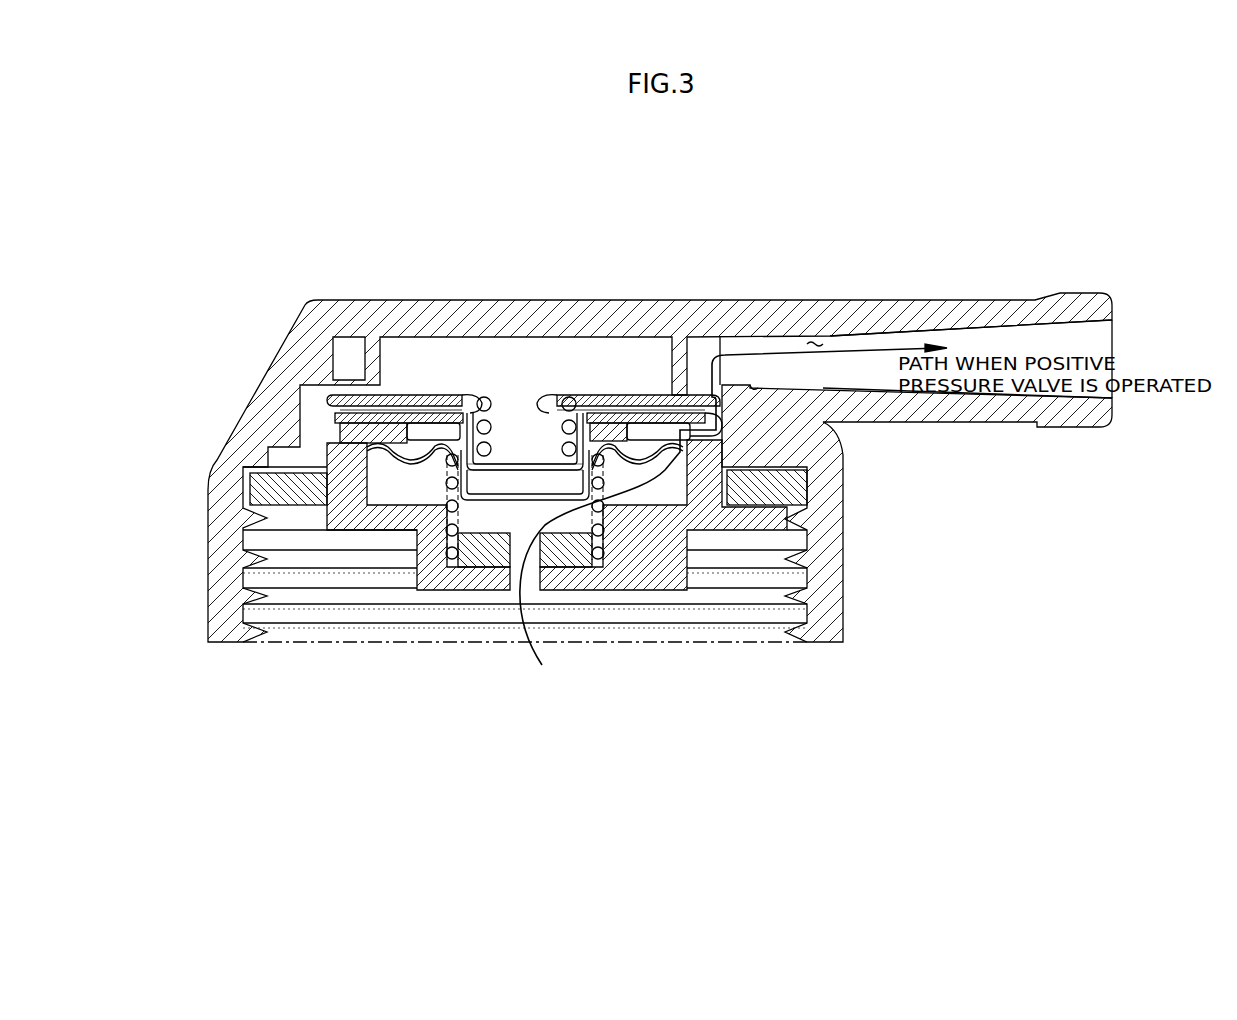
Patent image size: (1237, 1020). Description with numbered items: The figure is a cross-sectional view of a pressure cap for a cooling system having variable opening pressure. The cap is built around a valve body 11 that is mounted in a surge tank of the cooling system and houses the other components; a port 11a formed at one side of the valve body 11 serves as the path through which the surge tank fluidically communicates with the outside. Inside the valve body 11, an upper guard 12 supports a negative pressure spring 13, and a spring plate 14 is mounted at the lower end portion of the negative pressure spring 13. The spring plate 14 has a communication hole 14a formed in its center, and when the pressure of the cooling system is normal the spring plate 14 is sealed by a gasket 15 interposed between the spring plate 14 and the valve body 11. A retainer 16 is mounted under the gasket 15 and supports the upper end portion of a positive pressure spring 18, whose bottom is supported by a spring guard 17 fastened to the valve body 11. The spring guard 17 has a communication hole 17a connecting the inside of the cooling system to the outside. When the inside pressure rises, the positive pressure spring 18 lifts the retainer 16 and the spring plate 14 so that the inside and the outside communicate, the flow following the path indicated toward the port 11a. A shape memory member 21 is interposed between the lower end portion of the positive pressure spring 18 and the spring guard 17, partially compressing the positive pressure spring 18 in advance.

The valve body 11 is at (218, 608).
The port 11a is at (817, 338).
The upper guard 12 is at (412, 400).
The negative pressure spring 13 is at (572, 423).
The spring plate 14 is at (632, 420).
The communication hole 14a is at (528, 463).
The gasket 15 is at (347, 433).
The retainer 16 is at (412, 457).
The spring guard 17 is at (663, 520).
The communication hole 17a is at (540, 508).
The positive pressure spring 18 is at (448, 485).
The shape memory member 21 is at (570, 553).